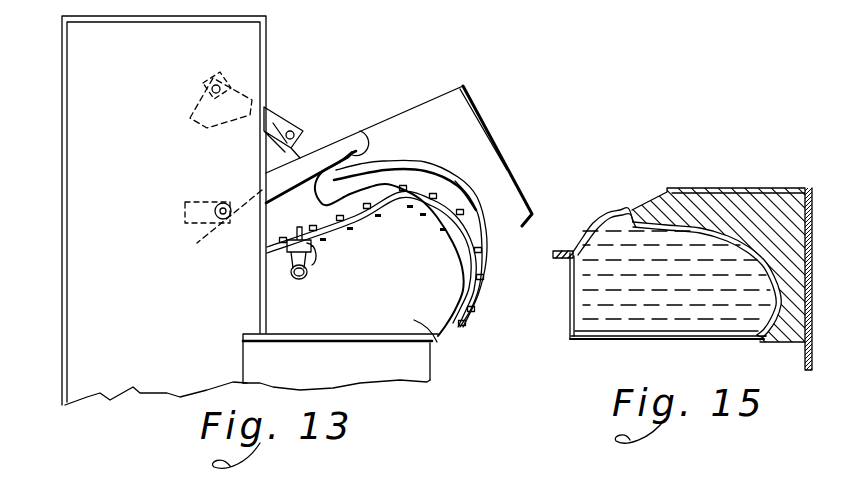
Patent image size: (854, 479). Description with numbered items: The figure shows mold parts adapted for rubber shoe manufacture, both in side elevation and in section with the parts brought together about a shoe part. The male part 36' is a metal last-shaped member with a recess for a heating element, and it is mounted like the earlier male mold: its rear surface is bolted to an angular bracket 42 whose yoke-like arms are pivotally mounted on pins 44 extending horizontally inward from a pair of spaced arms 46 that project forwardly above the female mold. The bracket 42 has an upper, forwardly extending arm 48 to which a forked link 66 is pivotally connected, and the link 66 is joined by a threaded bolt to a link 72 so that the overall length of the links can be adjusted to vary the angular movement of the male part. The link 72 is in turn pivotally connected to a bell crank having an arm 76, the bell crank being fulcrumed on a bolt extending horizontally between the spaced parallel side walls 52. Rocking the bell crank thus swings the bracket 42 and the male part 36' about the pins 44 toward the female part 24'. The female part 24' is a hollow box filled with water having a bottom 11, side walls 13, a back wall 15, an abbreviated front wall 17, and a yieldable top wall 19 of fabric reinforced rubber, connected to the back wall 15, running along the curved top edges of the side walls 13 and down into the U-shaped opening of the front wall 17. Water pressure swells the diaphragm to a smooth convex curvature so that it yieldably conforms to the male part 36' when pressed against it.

In FIG. 13, the side walls 52 is at (78, 218).
In FIG. 13, the arm of bell crank 76 is at (196, 112).
In FIG. 13, the link 72 is at (247, 90).
In FIG. 13, the link 66 is at (282, 117).
In FIG. 13, the arm 48 is at (312, 150).
In FIG. 13, the angular bracket 42 is at (368, 128).
In FIG. 13, the male part 36' is at (399, 145).
In FIG. 15, the male part 36' is at (648, 253).
In FIG. 13, the yieldable top wall 19 is at (450, 200).
In FIG. 15, the yieldable top wall 19 is at (619, 208).
In FIG. 13, the female part 24' is at (406, 257).
In FIG. 13, the arms 46 is at (203, 200).
In FIG. 13, the pins 44 is at (222, 231).
In FIG. 13, the side walls 13 is at (435, 342).
In FIG. 15, the back wall 15 is at (568, 318).
In FIG. 15, the bottom 11 is at (630, 341).
In FIG. 15, the front wall 17 is at (770, 334).